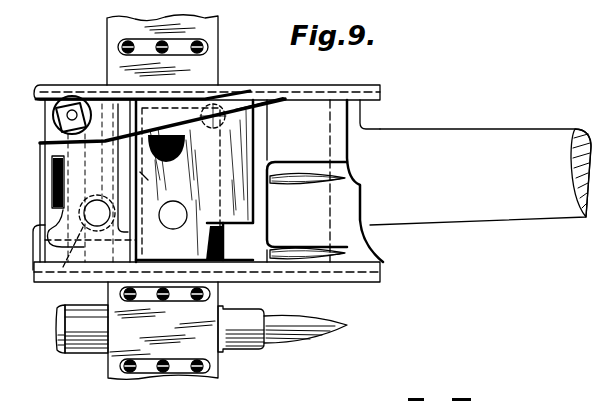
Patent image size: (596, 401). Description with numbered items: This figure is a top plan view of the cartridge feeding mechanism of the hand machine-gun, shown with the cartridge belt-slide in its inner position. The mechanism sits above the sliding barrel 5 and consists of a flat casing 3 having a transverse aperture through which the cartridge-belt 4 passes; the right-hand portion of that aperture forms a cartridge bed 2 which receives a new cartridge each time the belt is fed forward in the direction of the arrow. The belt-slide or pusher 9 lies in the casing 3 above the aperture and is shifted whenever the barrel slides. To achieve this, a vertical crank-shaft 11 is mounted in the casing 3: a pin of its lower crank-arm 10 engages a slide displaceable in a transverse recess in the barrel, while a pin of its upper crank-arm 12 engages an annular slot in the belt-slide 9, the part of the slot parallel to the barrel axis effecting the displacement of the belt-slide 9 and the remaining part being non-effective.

The cartridge bed 2 is at (307, 210).
The casing 3 is at (293, 112).
The cartridge-belt 4 is at (219, 56).
The sliding barrel 5 is at (480, 177).
The belt-slide 9 is at (201, 248).
The lower crank-arm 10 is at (53, 158).
The vertical crank-shaft 11 is at (72, 114).
The upper crank-arm 12 is at (206, 103).